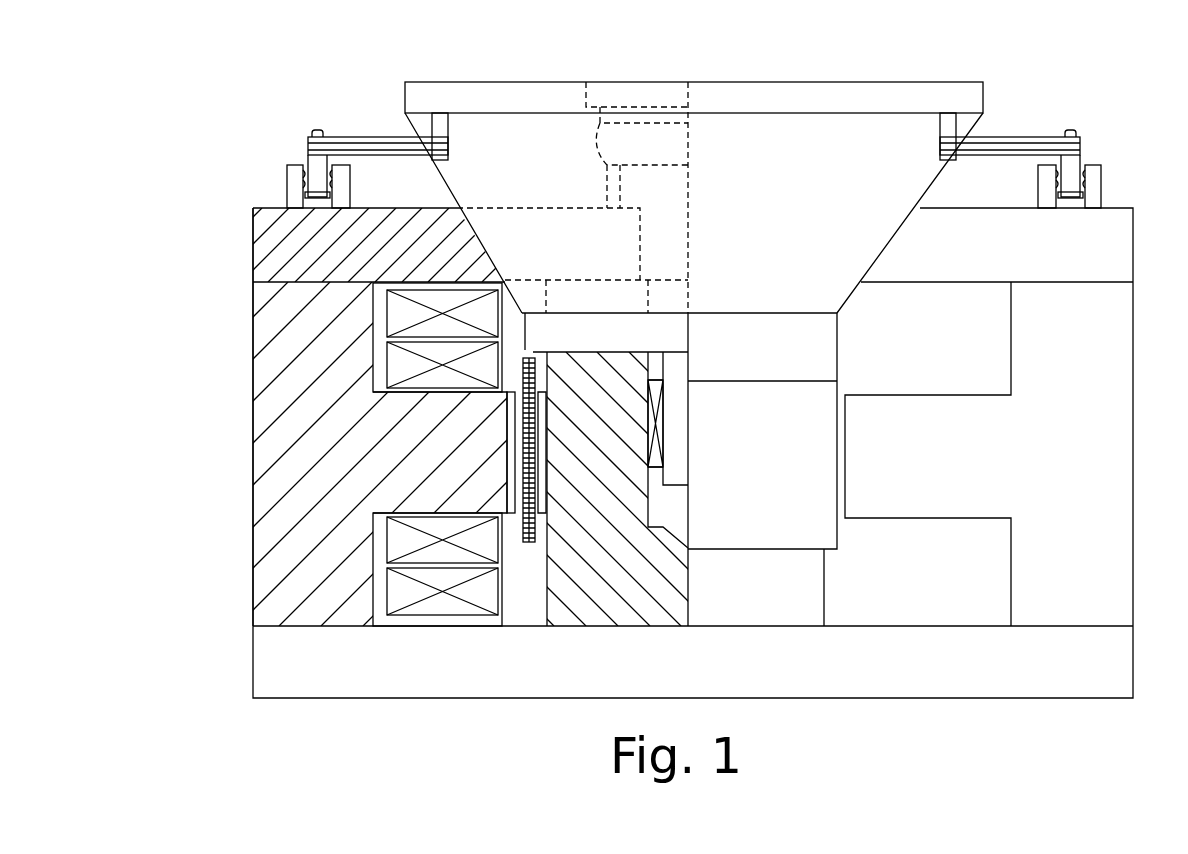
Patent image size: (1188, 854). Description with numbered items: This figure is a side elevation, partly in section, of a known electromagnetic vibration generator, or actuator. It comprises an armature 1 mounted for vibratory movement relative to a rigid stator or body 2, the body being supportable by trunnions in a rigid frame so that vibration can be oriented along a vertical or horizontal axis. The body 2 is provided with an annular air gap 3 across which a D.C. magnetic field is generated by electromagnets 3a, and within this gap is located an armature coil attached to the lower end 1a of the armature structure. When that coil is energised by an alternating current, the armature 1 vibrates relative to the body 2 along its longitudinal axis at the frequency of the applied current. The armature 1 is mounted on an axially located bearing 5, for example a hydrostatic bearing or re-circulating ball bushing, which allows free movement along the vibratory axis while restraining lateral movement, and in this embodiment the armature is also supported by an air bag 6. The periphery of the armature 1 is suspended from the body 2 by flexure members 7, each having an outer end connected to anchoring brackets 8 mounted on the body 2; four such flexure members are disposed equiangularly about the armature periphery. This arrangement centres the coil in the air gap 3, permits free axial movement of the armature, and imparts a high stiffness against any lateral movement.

The armature 1 is at (815, 127).
The lower end of the armature structure 1a is at (533, 352).
The stator or body 2 is at (288, 440).
The annular air gap 3 is at (512, 517).
The electromagnets 3a is at (400, 368).
The bearing 5 is at (677, 475).
The air bag 6 is at (600, 157).
The flexure members 7 is at (372, 124).
The anchoring brackets 8 is at (271, 183).